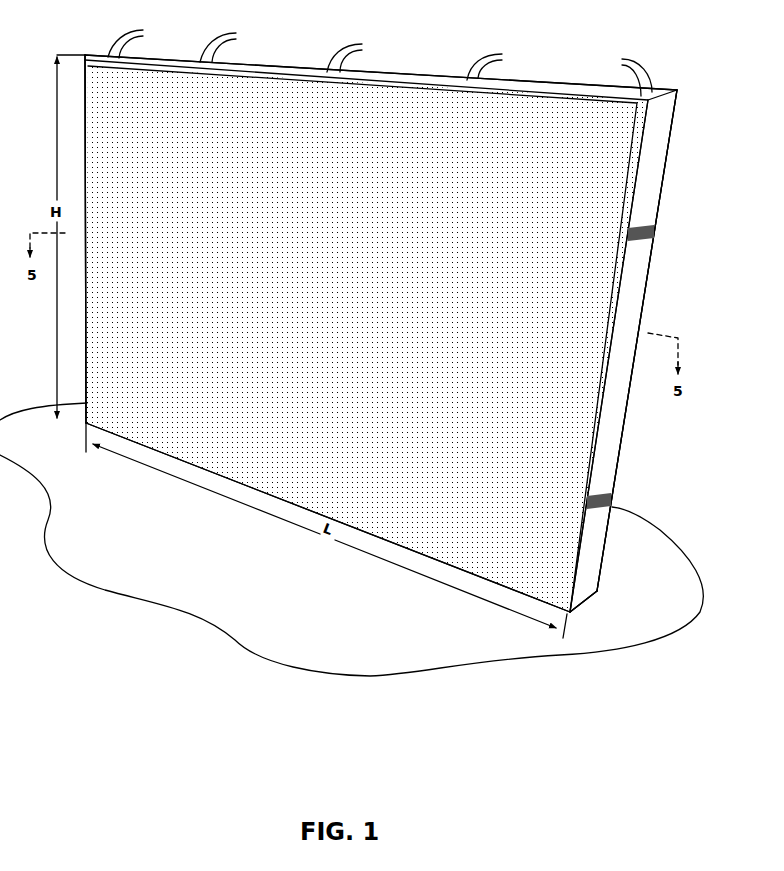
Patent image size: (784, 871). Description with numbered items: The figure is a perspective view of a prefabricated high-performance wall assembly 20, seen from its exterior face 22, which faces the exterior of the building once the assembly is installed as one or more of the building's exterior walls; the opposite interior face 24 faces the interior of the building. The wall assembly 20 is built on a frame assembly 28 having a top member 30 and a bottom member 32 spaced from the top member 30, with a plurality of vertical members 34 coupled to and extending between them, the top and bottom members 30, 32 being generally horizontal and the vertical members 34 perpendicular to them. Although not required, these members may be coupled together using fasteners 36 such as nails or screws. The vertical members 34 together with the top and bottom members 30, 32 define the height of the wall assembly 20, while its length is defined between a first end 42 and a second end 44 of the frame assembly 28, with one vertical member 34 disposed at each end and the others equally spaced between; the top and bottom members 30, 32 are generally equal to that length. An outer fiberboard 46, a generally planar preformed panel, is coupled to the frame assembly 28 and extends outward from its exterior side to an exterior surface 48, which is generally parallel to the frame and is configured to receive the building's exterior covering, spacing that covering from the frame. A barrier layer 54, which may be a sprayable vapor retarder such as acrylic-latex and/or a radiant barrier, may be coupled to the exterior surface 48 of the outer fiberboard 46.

The high-performance wall assembly 20 is at (684, 88).
The exterior face 22 is at (85, 424).
The interior face 24 is at (653, 323).
The frame assembly 28 is at (681, 151).
The top member 30 is at (536, 83).
The bottom member 32 is at (597, 591).
The vertical members 34 is at (618, 395).
The fasteners 36 is at (380, 60).
The first end 42 is at (85, 317).
The second end 44 is at (618, 528).
The outer fiberboard 46 is at (612, 197).
The exterior surface 48 is at (367, 339).
The barrier layer 54 is at (83, 160).